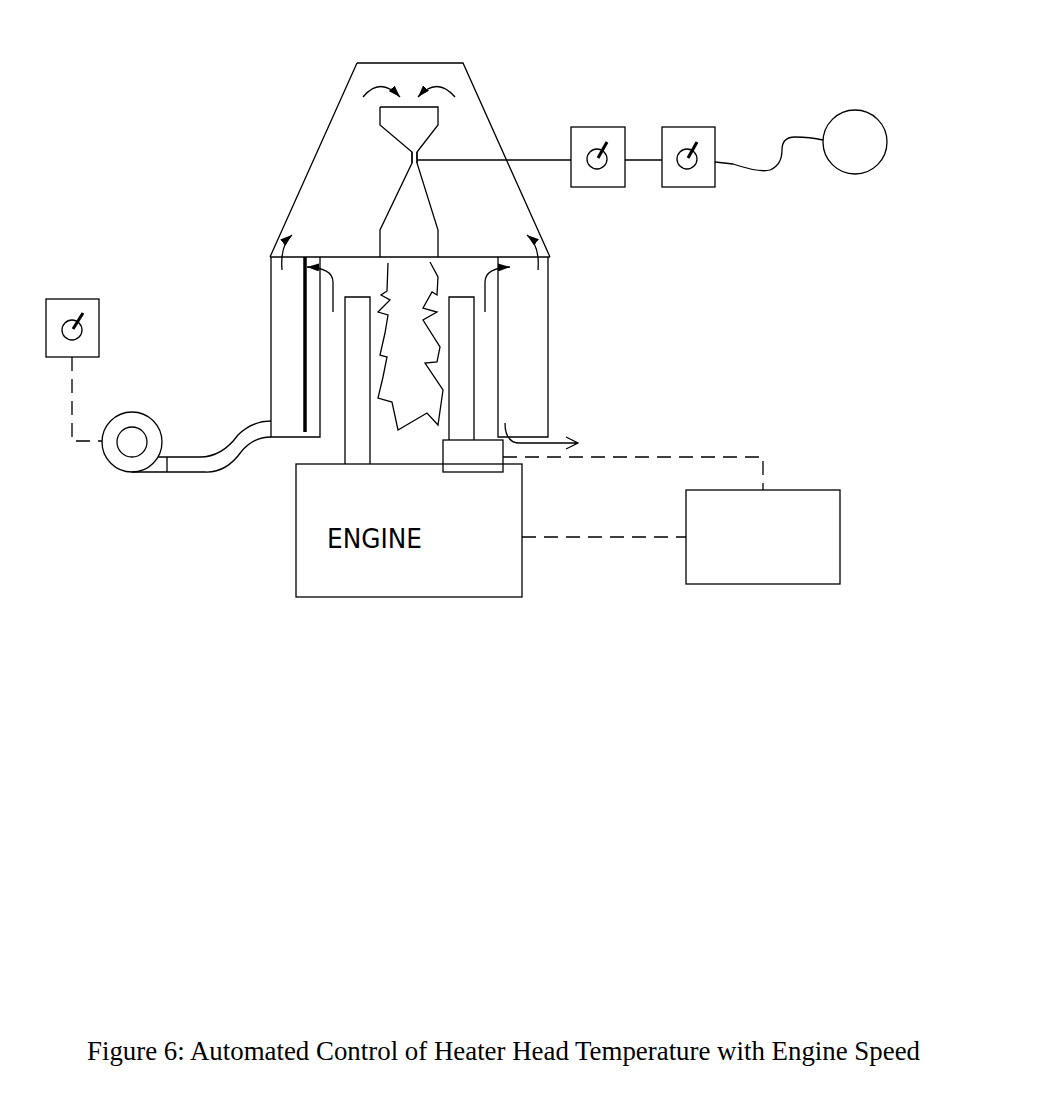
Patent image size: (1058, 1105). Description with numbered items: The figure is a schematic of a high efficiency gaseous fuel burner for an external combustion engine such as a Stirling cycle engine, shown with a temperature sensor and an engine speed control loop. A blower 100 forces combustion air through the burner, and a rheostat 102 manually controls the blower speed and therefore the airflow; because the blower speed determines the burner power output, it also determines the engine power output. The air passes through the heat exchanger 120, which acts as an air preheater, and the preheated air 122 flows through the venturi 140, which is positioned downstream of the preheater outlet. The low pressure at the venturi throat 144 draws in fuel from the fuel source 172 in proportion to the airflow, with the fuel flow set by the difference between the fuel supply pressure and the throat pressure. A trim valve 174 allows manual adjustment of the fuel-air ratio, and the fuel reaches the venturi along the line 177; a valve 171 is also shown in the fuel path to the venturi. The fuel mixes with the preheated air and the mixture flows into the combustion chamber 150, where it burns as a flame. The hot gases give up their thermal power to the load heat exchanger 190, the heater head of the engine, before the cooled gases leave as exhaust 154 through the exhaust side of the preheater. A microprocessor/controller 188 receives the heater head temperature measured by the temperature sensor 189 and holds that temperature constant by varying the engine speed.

The blower 100 is at (186, 415).
The rheostat 102 is at (97, 340).
The heat exchanger 120 is at (406, 347).
The preheated air 122 is at (386, 142).
The venturi 140 is at (330, 178).
The venturi throat 144 is at (327, 114).
The combustion chamber 150 is at (320, 304).
The exhaust 154 is at (564, 433).
The fuel valve 171 is at (742, 120).
The fuel source 172 is at (889, 169).
The trim valve 174 is at (624, 120).
The fuel line 177 is at (494, 148).
The microprocessor/controller 188 is at (671, 520).
The temperature sensor 189 is at (473, 456).
The load heat exchanger 190 is at (496, 380).